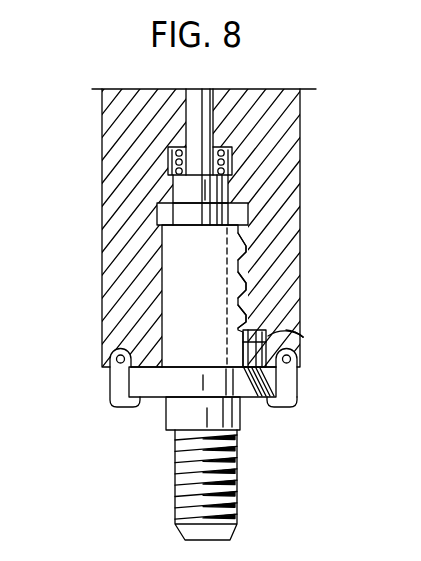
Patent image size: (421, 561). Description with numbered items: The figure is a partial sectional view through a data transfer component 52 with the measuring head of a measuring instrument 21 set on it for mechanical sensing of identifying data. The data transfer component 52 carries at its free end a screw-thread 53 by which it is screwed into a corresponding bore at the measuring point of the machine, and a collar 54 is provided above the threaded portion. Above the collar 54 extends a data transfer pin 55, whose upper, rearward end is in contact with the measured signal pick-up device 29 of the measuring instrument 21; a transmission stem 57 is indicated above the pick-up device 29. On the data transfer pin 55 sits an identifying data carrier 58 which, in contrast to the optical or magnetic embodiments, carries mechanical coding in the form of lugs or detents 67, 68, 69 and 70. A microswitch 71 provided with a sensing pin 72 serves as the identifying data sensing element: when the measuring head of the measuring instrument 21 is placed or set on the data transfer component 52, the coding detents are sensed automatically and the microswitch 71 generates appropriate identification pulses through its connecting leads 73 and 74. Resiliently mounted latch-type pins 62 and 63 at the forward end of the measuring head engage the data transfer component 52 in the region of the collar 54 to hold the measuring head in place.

The measuring instrument 21 is at (304, 114).
The transmission stem 57 is at (215, 112).
The measured signal pick-up device 29 is at (180, 190).
The data transfer pin 55 is at (182, 224).
The identifying data carrier 58 is at (248, 206).
The detent 67 is at (238, 232).
The detent 68 is at (244, 262).
The detent 69 is at (244, 297).
The detent 70 is at (285, 331).
The connecting lead 73 is at (302, 334).
The connecting lead 74 is at (300, 323).
The sensing pin 72 is at (257, 398).
The collar 54 is at (160, 398).
The latching pin 63 is at (116, 387).
The latching pin 62 is at (341, 378).
The microswitch 71 is at (293, 394).
The data transfer component 52 is at (240, 483).
The screw-thread 53 is at (187, 498).